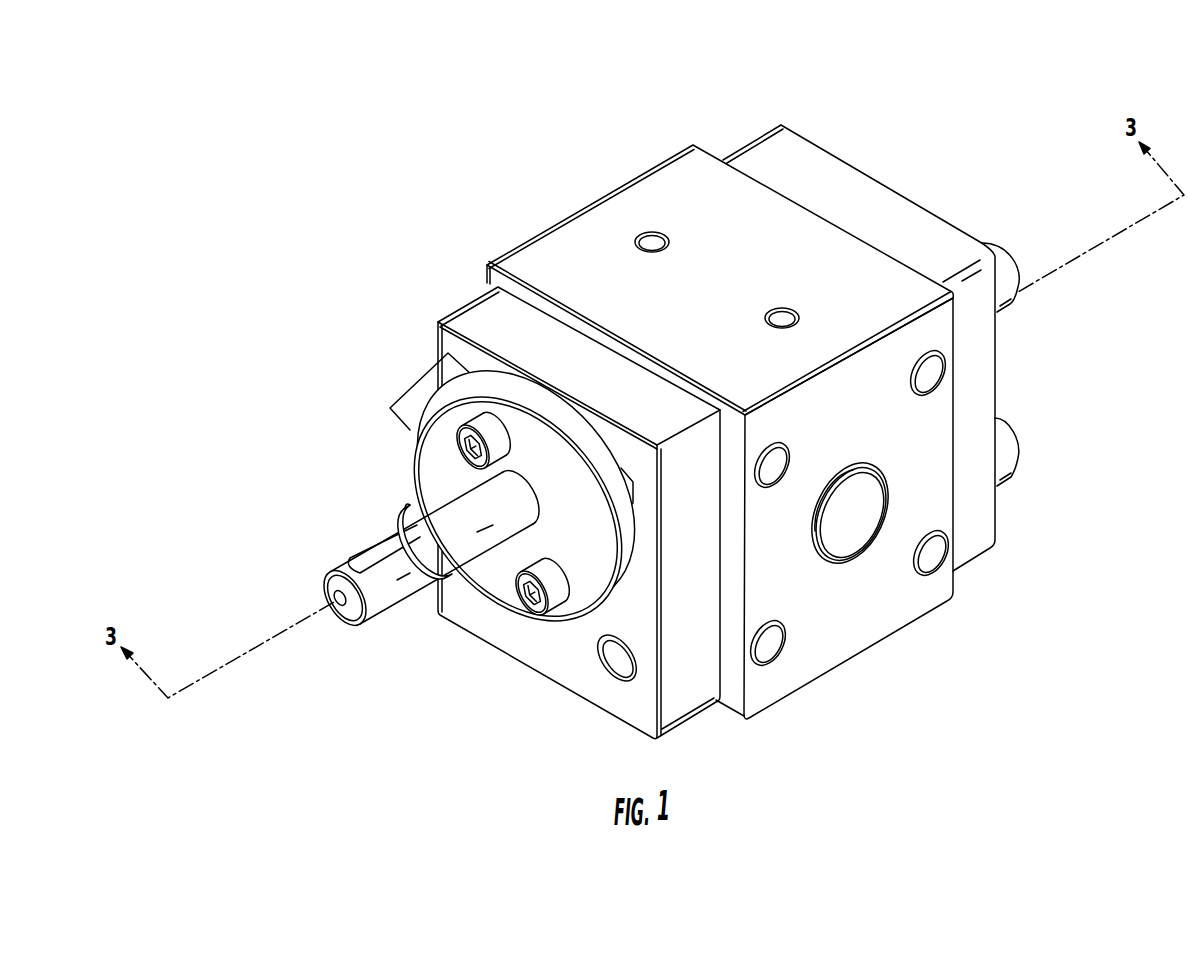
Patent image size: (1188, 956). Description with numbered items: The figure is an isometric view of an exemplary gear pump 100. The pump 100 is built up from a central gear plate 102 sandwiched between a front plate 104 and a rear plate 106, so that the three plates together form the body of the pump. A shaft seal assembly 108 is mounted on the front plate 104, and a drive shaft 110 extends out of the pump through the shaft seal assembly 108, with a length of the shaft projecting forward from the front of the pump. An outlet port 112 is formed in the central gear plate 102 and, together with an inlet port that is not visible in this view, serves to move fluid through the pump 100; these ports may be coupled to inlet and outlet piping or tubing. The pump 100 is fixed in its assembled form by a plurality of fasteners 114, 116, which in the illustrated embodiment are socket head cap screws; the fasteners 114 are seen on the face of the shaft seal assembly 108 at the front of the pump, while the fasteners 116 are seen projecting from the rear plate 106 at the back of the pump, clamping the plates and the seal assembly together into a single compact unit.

The gear pump 100 is at (698, 396).
The central gear plate 102 is at (617, 207).
The front plate 104 is at (468, 307).
The rear plate 106 is at (805, 152).
The shaft seal assembly 108 is at (417, 377).
The drive shaft 110 is at (405, 513).
The outlet port 112 is at (834, 508).
The fasteners 114 is at (528, 605).
The fasteners 116 is at (1009, 444).